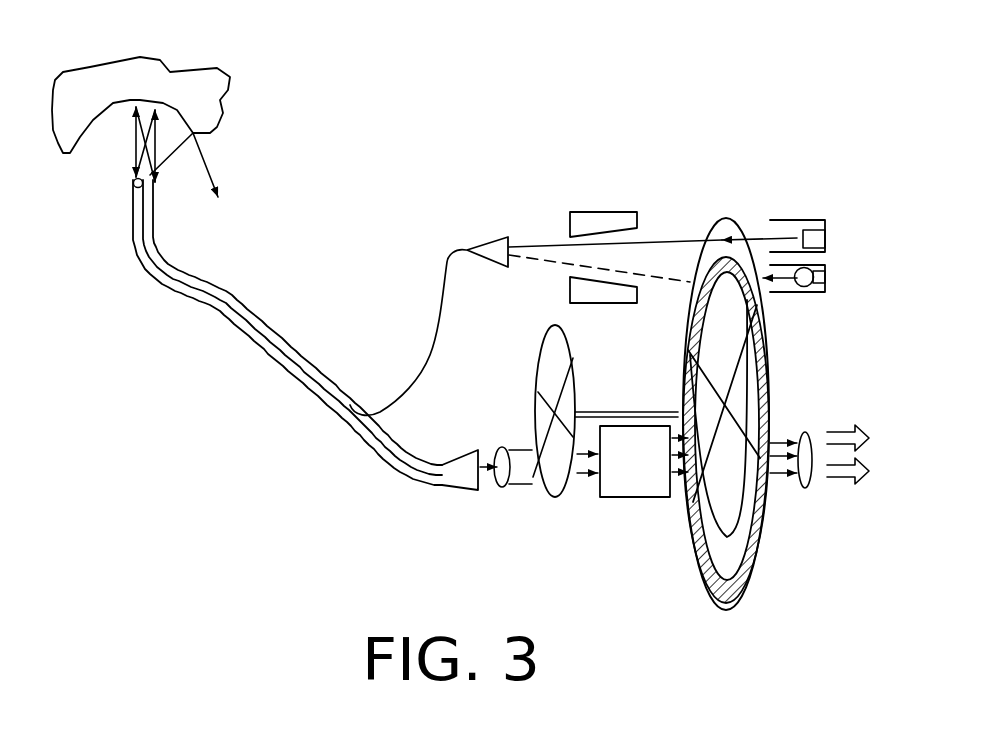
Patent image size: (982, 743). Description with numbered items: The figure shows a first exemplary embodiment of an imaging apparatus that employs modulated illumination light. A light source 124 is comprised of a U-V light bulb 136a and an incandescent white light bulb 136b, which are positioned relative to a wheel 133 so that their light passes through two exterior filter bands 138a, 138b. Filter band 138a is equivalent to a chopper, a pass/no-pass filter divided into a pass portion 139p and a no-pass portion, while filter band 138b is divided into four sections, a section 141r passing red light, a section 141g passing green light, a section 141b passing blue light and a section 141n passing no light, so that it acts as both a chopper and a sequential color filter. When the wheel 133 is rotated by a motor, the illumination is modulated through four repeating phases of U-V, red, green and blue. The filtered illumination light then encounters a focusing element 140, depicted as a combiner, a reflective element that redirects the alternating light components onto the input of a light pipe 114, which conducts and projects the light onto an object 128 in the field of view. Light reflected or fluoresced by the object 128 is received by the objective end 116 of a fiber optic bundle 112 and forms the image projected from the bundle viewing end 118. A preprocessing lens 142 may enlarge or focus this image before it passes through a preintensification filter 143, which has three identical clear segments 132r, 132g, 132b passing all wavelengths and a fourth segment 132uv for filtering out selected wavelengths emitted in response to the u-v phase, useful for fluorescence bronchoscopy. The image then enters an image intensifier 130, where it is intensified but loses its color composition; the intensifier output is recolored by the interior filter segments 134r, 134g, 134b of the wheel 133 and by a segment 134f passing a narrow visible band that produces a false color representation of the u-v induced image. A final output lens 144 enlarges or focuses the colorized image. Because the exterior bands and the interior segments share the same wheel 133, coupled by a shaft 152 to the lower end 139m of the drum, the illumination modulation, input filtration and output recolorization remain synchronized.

The fiber optic bundle 112 is at (225, 317).
The light pipe 114 is at (437, 328).
The objective end 116 is at (135, 187).
The bundle viewing end 118 is at (463, 478).
The light source 124 is at (815, 215).
The object 128 is at (197, 88).
The image intensifier 130 is at (650, 480).
The clear segment 132g is at (555, 360).
The clear segment 132r is at (545, 418).
The clear segment 132b is at (572, 392).
The u-v filter segment 132uv is at (538, 505).
The wheel 133 is at (718, 212).
The interior filter segment 134r is at (703, 393).
The interior filter segment 134g is at (732, 343).
The interior filter segment 134b is at (743, 392).
The interior filter segment 134f is at (730, 558).
The U-V light bulb 136a is at (826, 230).
The incandescent light bulb 136b is at (826, 280).
The filter band 138a is at (760, 553).
The filter band 138b is at (710, 587).
The pass portion 139p is at (733, 225).
The drum distal end 139m is at (743, 598).
The focusing element 140 is at (583, 218).
The no-pass section 141n is at (758, 303).
The red-passing section 141r is at (760, 370).
The green-passing section 141g is at (742, 537).
The blue-passing section 141b is at (730, 507).
The preprocessing lens 142 is at (500, 495).
The preintensification filter 143 is at (550, 328).
The output lens 144 is at (807, 443).
The drive shaft 152 is at (602, 412).